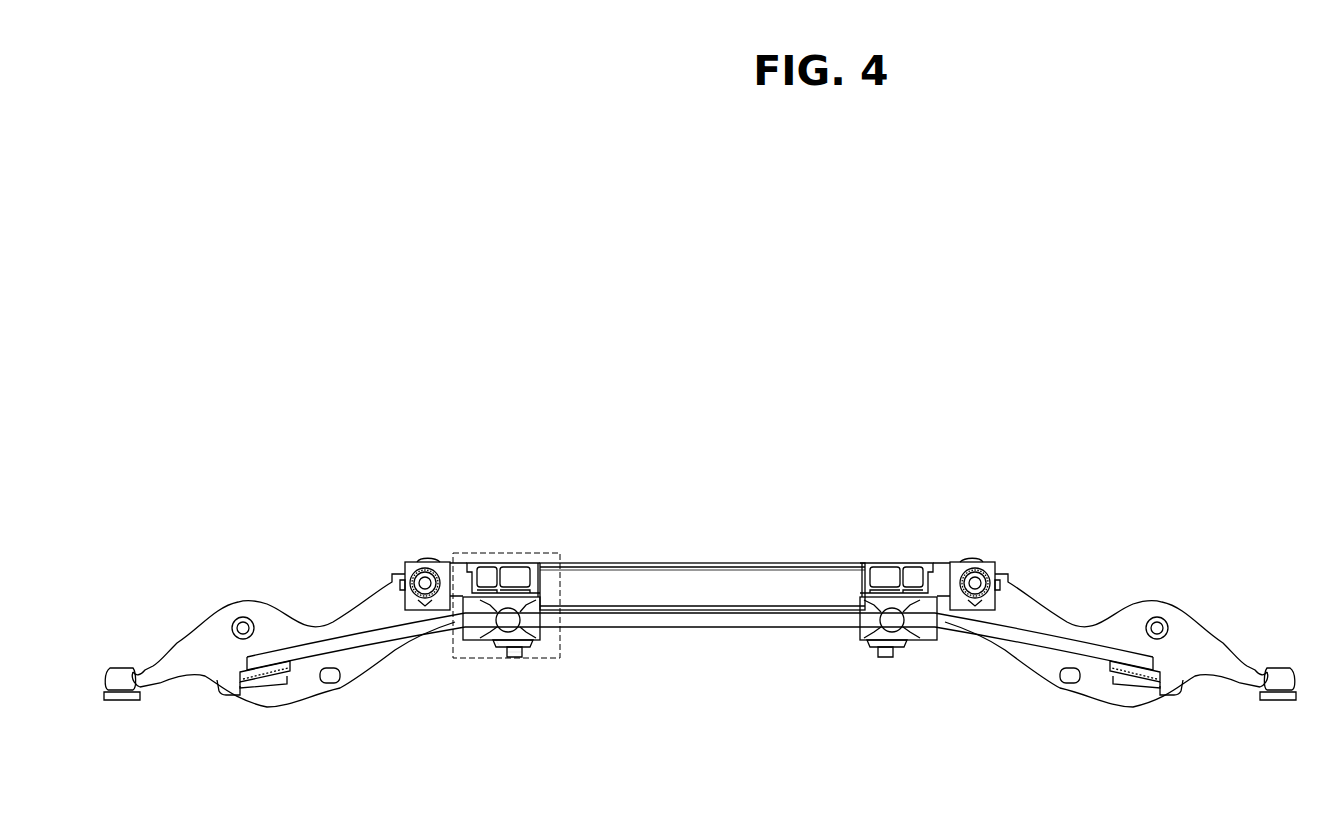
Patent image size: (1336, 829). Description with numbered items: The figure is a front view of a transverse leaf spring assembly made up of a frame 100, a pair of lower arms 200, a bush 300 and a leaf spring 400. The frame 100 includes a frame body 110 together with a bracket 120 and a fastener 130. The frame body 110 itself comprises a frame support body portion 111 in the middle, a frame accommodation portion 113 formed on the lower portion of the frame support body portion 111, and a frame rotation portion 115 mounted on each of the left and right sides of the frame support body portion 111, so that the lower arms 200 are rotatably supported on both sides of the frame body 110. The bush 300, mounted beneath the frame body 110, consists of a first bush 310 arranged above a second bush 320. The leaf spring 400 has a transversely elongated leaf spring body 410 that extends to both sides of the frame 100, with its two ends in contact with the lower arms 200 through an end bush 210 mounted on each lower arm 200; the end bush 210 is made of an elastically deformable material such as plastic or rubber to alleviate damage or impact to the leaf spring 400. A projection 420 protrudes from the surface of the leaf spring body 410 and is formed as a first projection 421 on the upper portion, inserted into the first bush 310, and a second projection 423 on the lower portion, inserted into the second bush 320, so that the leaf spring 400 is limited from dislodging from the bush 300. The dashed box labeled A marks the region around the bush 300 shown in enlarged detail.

The frame 100 is at (695, 471).
The frame body 110 is at (700, 503).
The frame support body portion 111 is at (652, 578).
The frame accommodation portion 113 is at (921, 572).
The frame rotation portion 115 is at (425, 580).
The bracket 120 is at (495, 649).
The fastener 130 is at (510, 650).
The lower arm 200 is at (700, 638).
The end bush 210 is at (268, 682).
The bush 300 is at (531, 661).
The first bush 310 is at (470, 605).
The second bush 320 is at (530, 648).
The leaf spring 400 is at (903, 709).
The leaf spring body 410 is at (790, 628).
The projection 420 is at (924, 679).
The first projection 421 is at (920, 641).
The second projection 423 is at (891, 663).
The detail region A is at (450, 660).